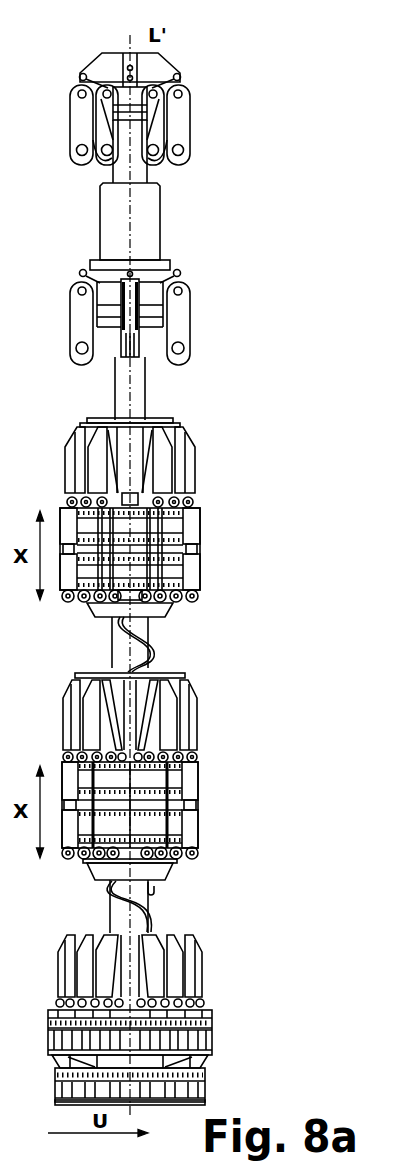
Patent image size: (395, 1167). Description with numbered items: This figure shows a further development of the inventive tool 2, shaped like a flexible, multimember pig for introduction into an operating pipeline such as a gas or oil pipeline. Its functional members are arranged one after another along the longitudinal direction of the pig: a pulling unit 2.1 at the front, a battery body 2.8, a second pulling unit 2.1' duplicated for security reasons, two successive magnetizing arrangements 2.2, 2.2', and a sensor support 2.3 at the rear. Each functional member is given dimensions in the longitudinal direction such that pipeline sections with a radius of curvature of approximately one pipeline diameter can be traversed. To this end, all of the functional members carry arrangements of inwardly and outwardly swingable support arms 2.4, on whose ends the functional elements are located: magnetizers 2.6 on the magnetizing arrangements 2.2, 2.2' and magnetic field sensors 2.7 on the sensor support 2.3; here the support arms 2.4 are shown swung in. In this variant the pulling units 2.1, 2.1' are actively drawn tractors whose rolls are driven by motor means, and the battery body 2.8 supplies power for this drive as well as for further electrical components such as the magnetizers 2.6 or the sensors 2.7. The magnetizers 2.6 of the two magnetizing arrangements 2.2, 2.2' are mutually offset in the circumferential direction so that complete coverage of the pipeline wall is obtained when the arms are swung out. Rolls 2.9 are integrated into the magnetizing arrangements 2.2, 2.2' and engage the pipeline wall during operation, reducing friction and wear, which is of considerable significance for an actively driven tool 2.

The tool 2 is at (222, 110).
The pulling unit 2.1 is at (190, 127).
The battery body 2.8 is at (165, 223).
The pulling unit 2.1' is at (215, 341).
The magnetizing arrangement 2.2 is at (201, 545).
The support arm 2.4 is at (196, 477).
The magnetizer 2.6 is at (198, 572).
The magnetizing arrangement 2.2' is at (194, 803).
The roll 2.9 is at (198, 852).
The sensor 2.7 is at (208, 1037).
The sensor support 2.3 is at (238, 1097).